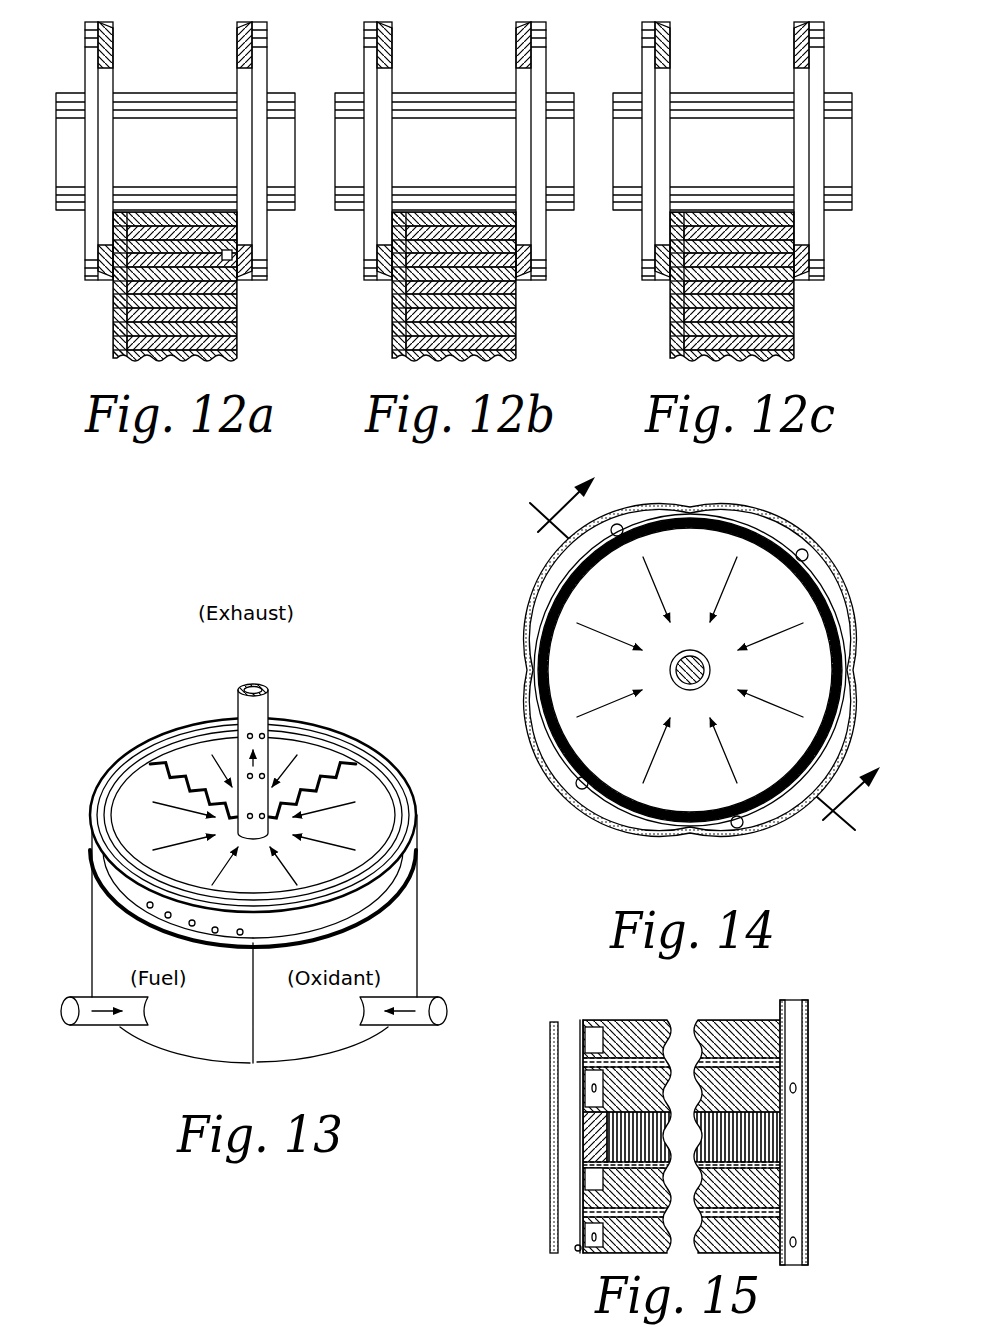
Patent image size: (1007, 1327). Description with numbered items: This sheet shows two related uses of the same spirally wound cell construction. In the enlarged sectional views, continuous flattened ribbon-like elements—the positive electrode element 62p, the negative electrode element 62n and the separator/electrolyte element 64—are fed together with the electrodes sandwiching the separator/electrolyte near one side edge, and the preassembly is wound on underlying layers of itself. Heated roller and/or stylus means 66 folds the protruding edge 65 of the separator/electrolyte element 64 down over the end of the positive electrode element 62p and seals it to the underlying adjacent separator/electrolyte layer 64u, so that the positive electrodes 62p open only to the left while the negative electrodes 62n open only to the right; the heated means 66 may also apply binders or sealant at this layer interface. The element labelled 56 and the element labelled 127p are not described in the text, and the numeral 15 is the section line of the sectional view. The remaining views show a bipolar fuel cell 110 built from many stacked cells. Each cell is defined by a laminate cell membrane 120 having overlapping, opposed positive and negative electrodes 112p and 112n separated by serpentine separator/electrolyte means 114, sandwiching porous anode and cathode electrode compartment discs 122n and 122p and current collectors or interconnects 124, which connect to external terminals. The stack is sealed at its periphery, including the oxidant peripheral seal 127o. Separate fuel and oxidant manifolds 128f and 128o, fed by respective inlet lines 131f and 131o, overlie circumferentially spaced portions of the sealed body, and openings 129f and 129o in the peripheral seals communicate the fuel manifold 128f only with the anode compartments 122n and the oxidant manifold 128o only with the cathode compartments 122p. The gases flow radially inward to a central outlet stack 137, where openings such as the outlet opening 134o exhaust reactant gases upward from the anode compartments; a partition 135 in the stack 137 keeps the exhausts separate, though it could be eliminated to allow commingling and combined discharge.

In FIG. 12C, the current collector rod 56 is at (833, 152).
In FIG. 12A, the negative electrode element 62n is at (125, 227).
In FIG. 12B, the negative electrode element 62n is at (488, 359).
In FIG. 12C, the negative electrode element 62n is at (765, 359).
In FIG. 12B, the positive electrode element 62p is at (370, 287).
In FIG. 12C, the positive electrode element 62p is at (648, 287).
In FIG. 12B, the separator/electrolyte element 64 is at (460, 291).
In FIG. 12C, the separator/electrolyte element 64 is at (736, 291).
In FIG. 12A, the underlying adjacent separator/electrolyte layer 64u is at (138, 288).
In FIG. 12A, the protruding edge 65 is at (240, 273).
In FIG. 12A, the heated roller and/or stylus means 66 is at (268, 237).
In FIG. 12B, the heated roller and/or stylus means 66 is at (556, 152).
In FIG. 13, the fuel cell 110 is at (434, 949).
In FIG. 15, the negative electrode 112n is at (747, 1123).
In FIG. 15, the positive electrode 112p is at (780, 1158).
In FIG. 15, the serpentine separator/electrolyte means 114 is at (750, 1133).
In FIG. 15, the cell membrane 120 is at (580, 1140).
In FIG. 14, the anode electrode compartment 122n is at (715, 792).
In FIG. 15, the anode electrode compartment 122n is at (583, 1123).
In FIG. 15, the cathode electrode compartment 122p is at (603, 1193).
In FIG. 15, the current collector or interconnect 124 is at (585, 1035).
In FIG. 15, the oxidant peripheral seal 127o is at (590, 1085).
In FIG. 15, the fuel passage 127p is at (580, 1173).
In FIG. 13, the oxidant manifold 128o is at (170, 728).
In FIG. 14, the oxidant manifold 128o is at (612, 525).
In FIG. 15, the oxidant manifold 128o is at (575, 1032).
In FIG. 13, the fuel manifold 128f is at (342, 733).
In FIG. 14, the fuel manifold 128f is at (807, 552).
In FIG. 13, the oxidant seal opening 129o is at (413, 863).
In FIG. 15, the oxidant seal opening 129o is at (580, 1060).
In FIG. 13, the fuel seal opening 129f is at (105, 867).
In FIG. 13, the fuel inlet line 131f is at (103, 1027).
In FIG. 13, the oxidant inlet line 131o is at (415, 1028).
In FIG. 15, the outlet opening 134o is at (796, 1087).
In FIG. 13, the partition 135 is at (250, 687).
In FIG. 15, the partition 135 is at (808, 1032).
In FIG. 13, the central outlet stack 137 is at (268, 708).
In FIG. 15, the central outlet stack 137 is at (780, 1013).
In FIG. 14, the section line 15 is at (685, 682).